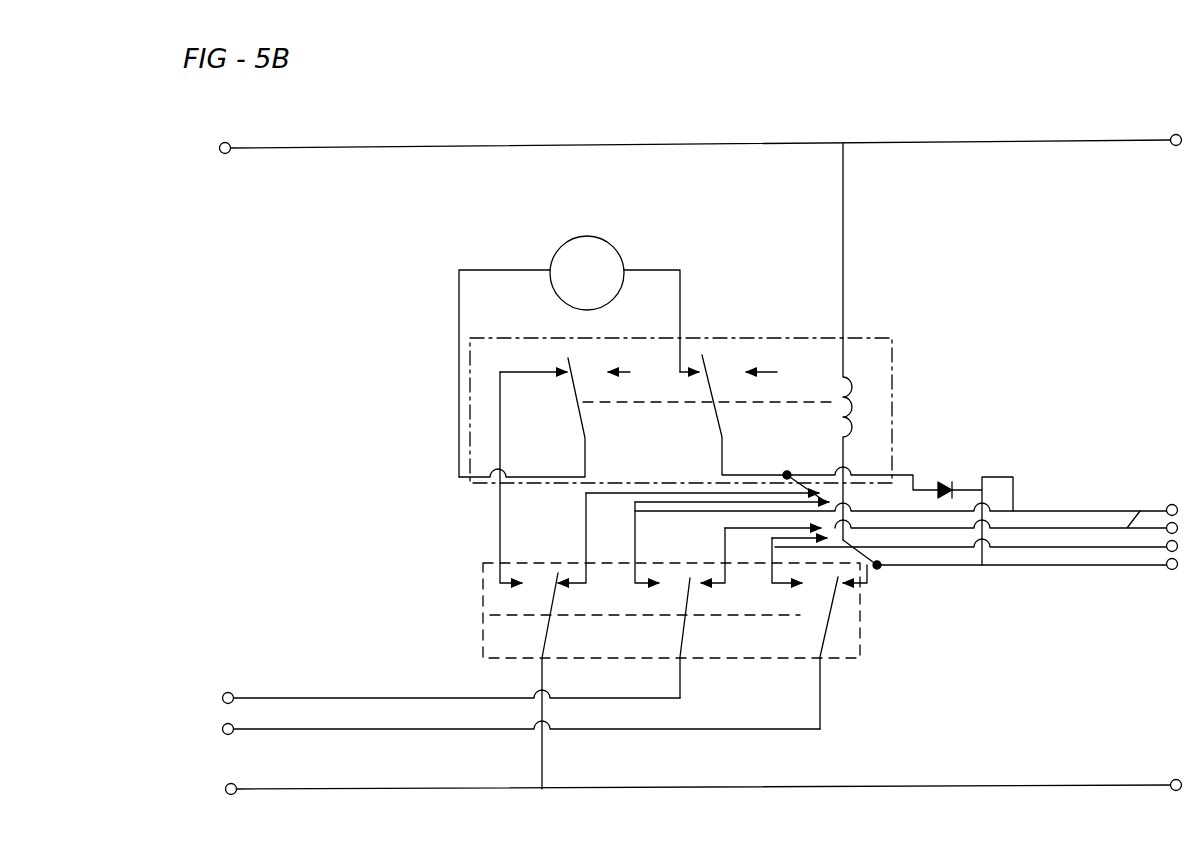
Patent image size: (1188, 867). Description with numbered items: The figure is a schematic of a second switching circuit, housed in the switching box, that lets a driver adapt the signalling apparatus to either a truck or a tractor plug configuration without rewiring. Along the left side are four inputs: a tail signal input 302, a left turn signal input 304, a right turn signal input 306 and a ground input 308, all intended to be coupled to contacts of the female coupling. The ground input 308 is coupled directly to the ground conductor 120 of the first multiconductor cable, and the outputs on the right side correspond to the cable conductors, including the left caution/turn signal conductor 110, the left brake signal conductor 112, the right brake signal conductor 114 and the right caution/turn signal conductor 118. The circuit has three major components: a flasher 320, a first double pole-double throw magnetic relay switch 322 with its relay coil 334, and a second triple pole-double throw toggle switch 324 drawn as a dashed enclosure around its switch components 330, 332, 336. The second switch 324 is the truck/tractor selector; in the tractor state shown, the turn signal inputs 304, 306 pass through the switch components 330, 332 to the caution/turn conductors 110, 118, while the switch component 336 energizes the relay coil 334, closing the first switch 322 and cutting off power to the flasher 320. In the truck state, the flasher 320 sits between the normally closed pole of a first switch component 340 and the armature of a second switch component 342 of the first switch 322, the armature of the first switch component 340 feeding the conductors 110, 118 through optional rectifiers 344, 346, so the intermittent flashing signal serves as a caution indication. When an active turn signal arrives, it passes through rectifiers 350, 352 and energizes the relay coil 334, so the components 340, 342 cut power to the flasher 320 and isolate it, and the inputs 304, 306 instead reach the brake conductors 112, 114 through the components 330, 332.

The conductor 110 is at (1142, 510).
The conductor 112 is at (1072, 510).
The conductor 114 is at (1140, 566).
The conductor 118 is at (1082, 566).
The ground conductor 120 is at (1128, 140).
The tail signal input 302 is at (365, 789).
The left turn signal input 304 is at (290, 698).
The right turn signal input 306 is at (340, 731).
The ground input 308 is at (290, 148).
The flasher 320 is at (607, 262).
The first double pole-double throw magnetic relay switch 322 is at (879, 377).
The second triple pole-double throw toggle switch 324 is at (845, 643).
The switch component 330 is at (823, 579).
The switch component 332 is at (684, 590).
The relay coil 334 is at (843, 388).
The switch component 336 is at (545, 578).
The first switch component 340 is at (726, 376).
The second switch component 342 is at (575, 382).
The rectifier 344 is at (945, 483).
The diode connection 346 is at (956, 490).
The rectifier 350 is at (797, 460).
The rectifier 352 is at (880, 568).